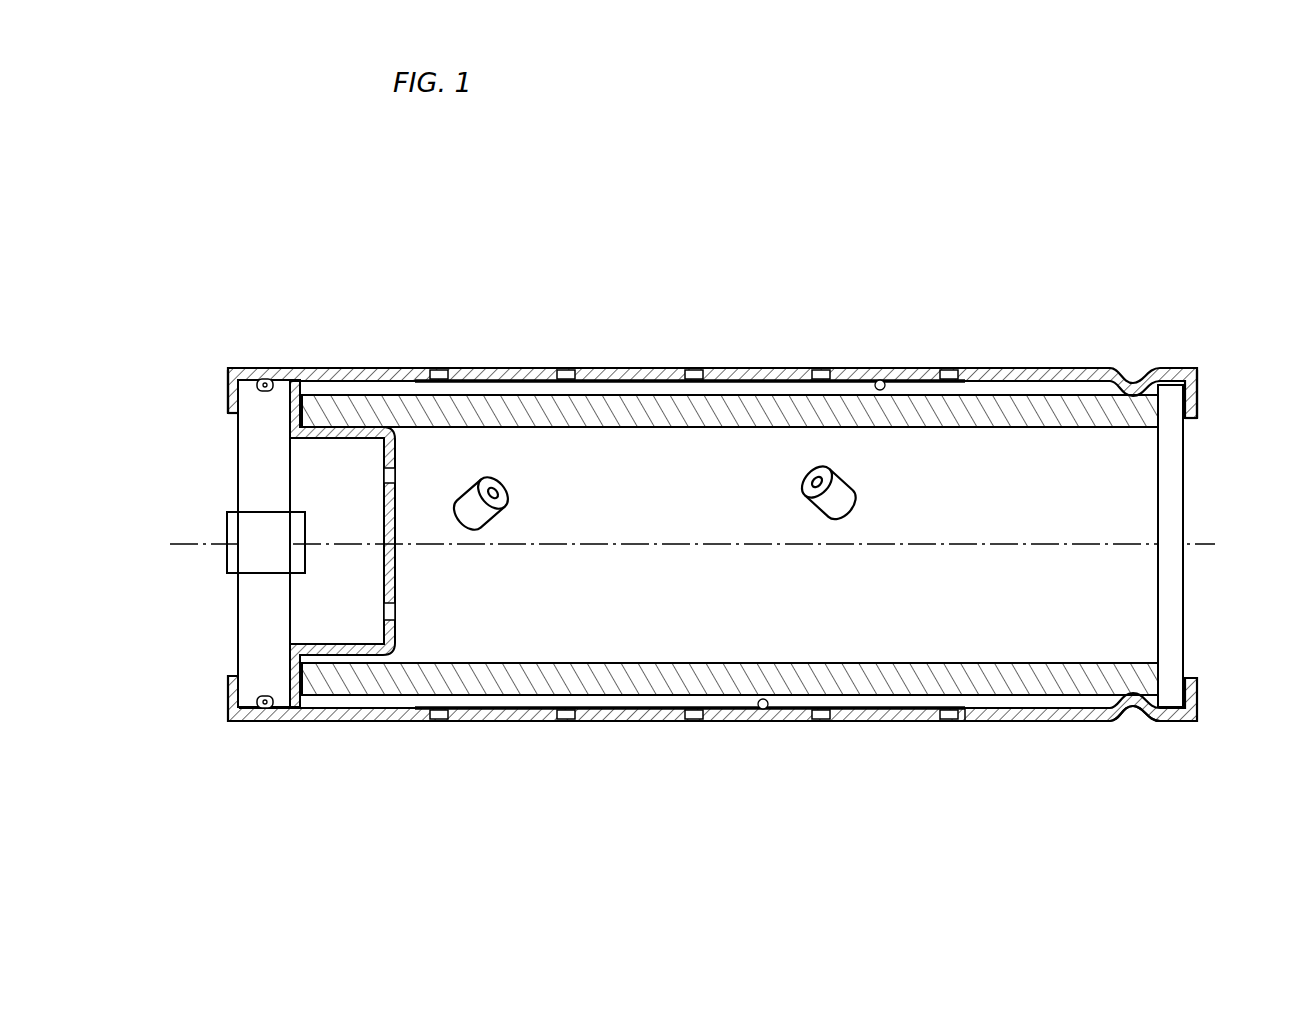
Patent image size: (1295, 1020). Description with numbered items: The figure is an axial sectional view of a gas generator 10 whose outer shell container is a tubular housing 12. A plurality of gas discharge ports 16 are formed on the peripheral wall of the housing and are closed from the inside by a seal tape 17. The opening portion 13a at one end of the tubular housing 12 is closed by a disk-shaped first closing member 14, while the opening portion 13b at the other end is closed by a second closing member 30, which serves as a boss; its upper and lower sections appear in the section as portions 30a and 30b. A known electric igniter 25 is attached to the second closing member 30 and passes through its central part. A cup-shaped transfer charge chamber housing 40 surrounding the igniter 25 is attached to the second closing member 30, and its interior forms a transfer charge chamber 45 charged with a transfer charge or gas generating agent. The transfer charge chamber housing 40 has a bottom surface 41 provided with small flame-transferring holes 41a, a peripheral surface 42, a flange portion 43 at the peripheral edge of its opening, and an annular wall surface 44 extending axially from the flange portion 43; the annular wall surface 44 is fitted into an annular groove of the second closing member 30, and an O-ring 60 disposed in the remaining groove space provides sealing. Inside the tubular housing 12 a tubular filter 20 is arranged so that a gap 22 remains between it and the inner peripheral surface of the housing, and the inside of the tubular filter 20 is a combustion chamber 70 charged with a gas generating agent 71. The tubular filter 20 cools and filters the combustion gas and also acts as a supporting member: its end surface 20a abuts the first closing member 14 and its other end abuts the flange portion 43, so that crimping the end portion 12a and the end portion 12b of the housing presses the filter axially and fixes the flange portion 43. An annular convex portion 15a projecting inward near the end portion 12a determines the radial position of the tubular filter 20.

The gas generator 10 is at (735, 336).
The tubular housing 12 is at (1010, 368).
The end portion 12a is at (1198, 400).
The end portion 12b is at (240, 397).
The opening portion 13a is at (1188, 418).
The opening portion 13b is at (236, 413).
The first closing member 14 is at (1172, 570).
The annular convex portion 15a is at (1140, 718).
The discharge ports 16 is at (820, 380).
The seal tape 17 is at (882, 380).
The tubular filter 20 is at (1032, 692).
The end surface 20a is at (1170, 685).
The gap 22 is at (978, 708).
The electric igniter 25 is at (298, 528).
The second closing member 30 is at (262, 643).
The upper portion of closure member 30a is at (290, 477).
The lower portion of closure member 30b is at (240, 622).
The transfer charge chamber housing 40 is at (404, 572).
The bottom surface 41 is at (396, 540).
The flame-transferring holes 41a is at (396, 475).
The peripheral surface 42 is at (333, 644).
The flange portion 43 is at (310, 706).
The annular wall surface 44 is at (272, 708).
The transfer charge chamber 45 is at (362, 507).
The O-ring 60 is at (268, 378).
The combustion chamber 70 is at (705, 598).
The gas generating agent 71 is at (485, 525).